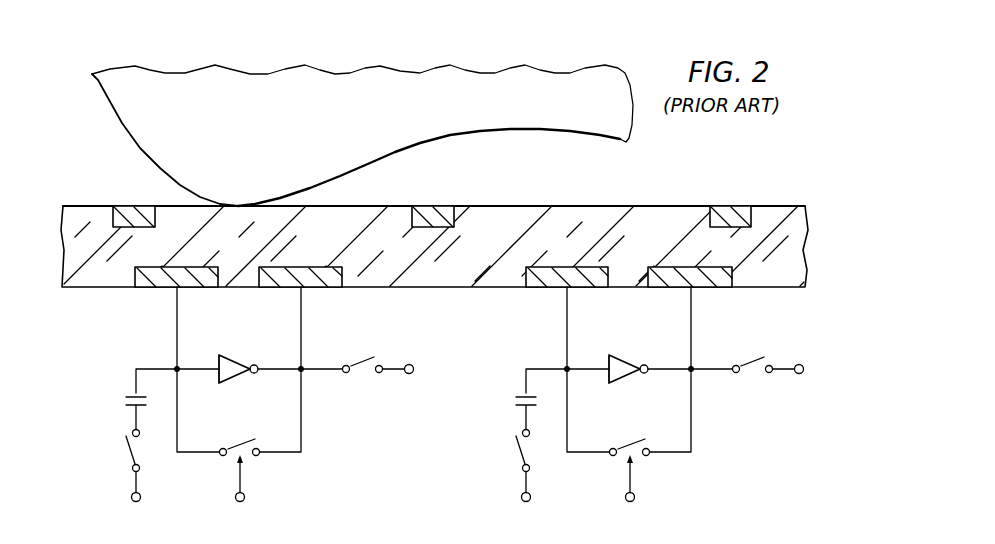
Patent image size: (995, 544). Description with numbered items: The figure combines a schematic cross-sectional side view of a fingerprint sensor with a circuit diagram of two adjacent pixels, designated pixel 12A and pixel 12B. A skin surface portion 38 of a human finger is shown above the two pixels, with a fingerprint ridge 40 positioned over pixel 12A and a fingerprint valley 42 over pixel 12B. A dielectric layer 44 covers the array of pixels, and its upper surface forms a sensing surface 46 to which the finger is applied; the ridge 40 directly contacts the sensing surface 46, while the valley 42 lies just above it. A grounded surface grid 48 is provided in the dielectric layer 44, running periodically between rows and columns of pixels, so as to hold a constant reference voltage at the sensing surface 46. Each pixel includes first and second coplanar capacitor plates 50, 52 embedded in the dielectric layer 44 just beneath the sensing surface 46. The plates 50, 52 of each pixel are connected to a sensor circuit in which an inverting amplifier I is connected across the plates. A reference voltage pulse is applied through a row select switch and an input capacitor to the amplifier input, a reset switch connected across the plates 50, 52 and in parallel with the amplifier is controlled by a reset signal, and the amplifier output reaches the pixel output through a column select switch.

The skin surface portion 38 is at (371, 62).
The fingerprint ridge 40 is at (243, 189).
The fingerprint valley 42 is at (503, 147).
The dielectric layer 44 is at (422, 290).
The sensing surface 46 is at (580, 206).
The grounded surface grid 48 is at (135, 206).
The first capacitor plate 50 is at (160, 290).
The second capacitor plate 52 is at (322, 290).
The pixel 12A is at (279, 407).
The pixel 12B is at (669, 407).